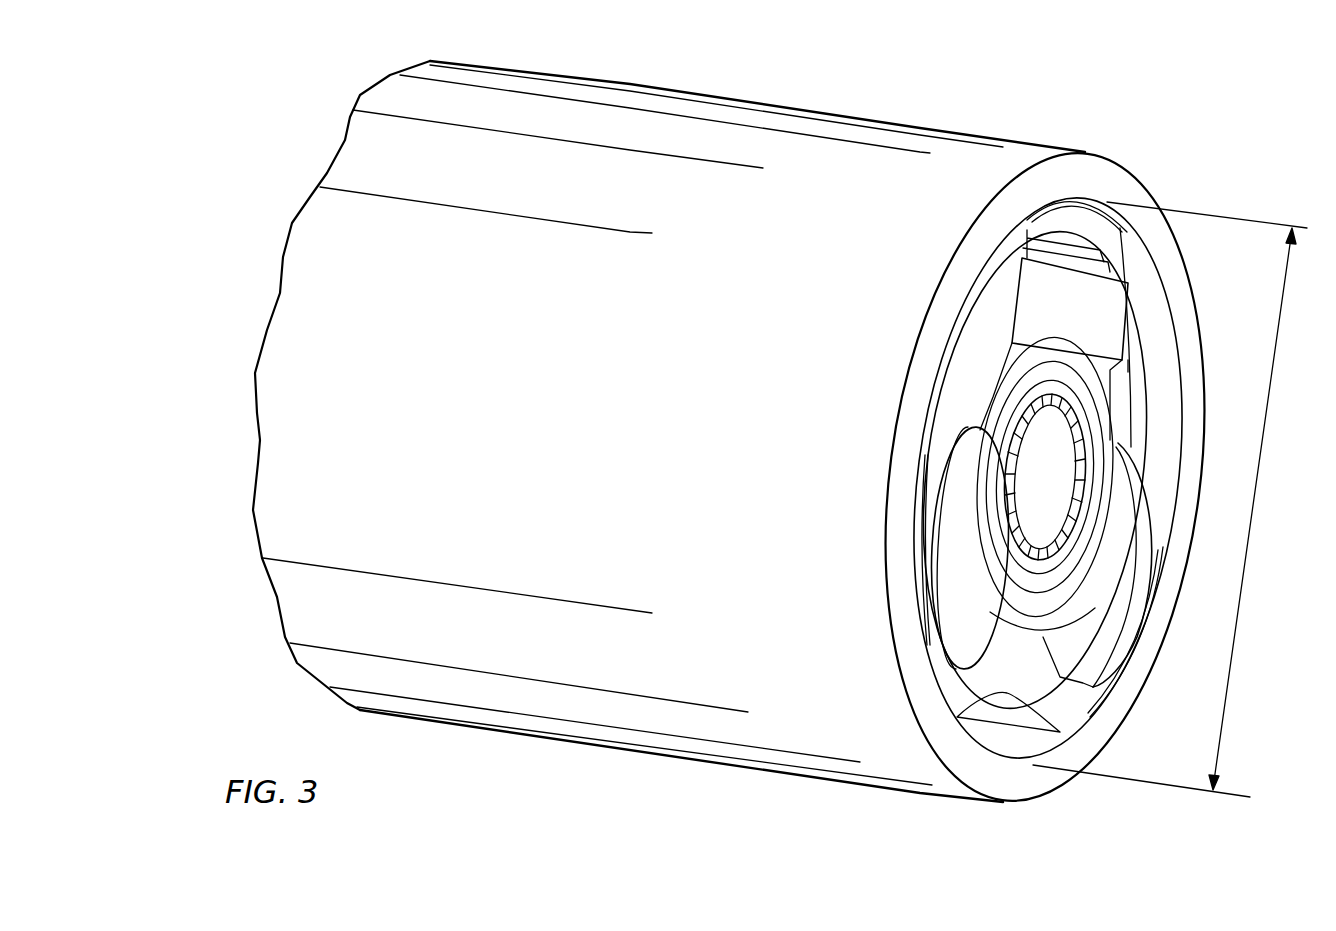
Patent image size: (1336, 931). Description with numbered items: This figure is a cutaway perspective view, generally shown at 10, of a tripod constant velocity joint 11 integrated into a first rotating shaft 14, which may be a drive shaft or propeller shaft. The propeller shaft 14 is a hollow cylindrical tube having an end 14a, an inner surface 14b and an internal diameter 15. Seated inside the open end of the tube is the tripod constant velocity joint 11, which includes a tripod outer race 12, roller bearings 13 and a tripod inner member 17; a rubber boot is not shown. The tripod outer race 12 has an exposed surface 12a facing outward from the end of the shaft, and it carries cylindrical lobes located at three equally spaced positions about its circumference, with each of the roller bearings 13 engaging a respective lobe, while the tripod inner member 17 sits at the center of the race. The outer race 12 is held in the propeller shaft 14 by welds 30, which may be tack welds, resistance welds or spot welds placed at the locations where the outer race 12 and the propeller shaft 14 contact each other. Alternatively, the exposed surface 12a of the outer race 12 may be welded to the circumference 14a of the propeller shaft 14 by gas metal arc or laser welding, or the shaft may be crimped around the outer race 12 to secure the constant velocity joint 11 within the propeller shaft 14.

The cutaway of a tripod constant velocity joint integrated into a first rotating sha 10 is at (1194, 128).
The tripod constant velocity joint 11 is at (1147, 291).
The tripod outer race 12 is at (1142, 323).
The exposed surface 12a is at (1130, 368).
The roller bearings 13 is at (1079, 326).
The first rotating shaft 14 is at (752, 143).
The end 14a is at (938, 728).
The inner surface 14b is at (1168, 413).
The internal diameter 15 is at (1170, 499).
The tripod inner member 17 is at (1018, 440).
The resistance welds 30 is at (1084, 196).